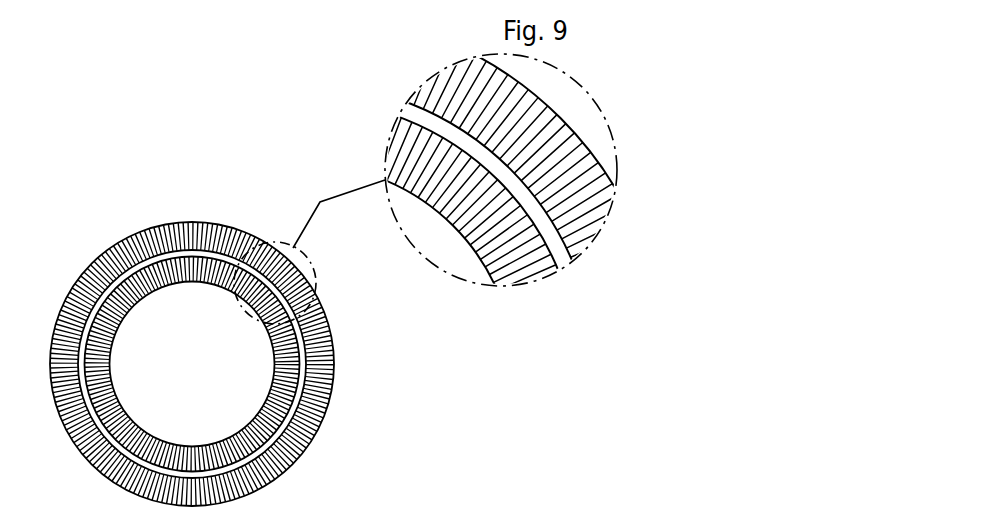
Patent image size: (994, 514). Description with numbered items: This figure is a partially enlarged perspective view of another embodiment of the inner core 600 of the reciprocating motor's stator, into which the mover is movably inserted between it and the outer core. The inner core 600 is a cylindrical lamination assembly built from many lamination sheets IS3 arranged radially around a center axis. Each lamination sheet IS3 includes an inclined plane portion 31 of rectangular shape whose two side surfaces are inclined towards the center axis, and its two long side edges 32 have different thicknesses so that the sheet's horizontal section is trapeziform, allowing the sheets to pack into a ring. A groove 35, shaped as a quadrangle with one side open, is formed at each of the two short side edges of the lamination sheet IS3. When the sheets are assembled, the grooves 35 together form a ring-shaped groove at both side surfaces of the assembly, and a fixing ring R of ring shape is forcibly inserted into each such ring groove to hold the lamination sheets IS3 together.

The inner core 600 is at (162, 216).
The fixing ring R is at (97, 263).
The long side edges 32 is at (280, 375).
The groove 35 is at (303, 408).
The inclined plane portion 31 is at (590, 207).
The lamination sheet IS3 is at (587, 124).